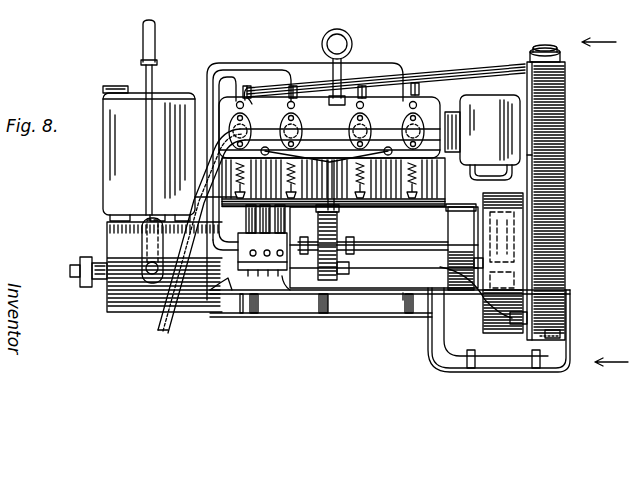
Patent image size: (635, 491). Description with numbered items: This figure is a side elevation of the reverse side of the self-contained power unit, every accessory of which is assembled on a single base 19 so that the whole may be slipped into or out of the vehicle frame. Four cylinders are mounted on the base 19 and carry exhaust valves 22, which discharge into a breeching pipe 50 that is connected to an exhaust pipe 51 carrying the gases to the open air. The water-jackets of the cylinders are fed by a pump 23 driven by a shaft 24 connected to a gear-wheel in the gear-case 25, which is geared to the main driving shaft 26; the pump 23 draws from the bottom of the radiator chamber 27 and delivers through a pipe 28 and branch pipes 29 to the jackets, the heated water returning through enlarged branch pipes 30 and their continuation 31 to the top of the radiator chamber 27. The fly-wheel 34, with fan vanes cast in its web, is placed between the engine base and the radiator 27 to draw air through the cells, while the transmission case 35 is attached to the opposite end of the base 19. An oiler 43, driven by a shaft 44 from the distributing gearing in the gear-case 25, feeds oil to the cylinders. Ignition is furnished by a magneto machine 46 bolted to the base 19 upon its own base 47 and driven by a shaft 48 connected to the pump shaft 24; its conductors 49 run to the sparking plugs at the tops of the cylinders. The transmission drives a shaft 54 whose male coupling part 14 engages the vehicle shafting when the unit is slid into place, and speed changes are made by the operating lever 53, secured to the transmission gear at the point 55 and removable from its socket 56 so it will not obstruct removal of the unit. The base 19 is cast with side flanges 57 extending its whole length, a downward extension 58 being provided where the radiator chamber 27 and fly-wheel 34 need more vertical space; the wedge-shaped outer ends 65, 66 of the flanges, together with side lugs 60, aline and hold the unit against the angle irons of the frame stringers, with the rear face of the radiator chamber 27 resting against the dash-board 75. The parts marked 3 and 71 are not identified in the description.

The engine 3 is at (390, 237).
The male part of the coupling 14 is at (87, 285).
The base 19 is at (237, 199).
The exhaust valves 22 is at (460, 216).
The pump 23 is at (338, 221).
The shaft 24 is at (432, 248).
The gear-case 25 is at (487, 212).
The main driving shaft 26 is at (505, 263).
The radiator chamber 27 is at (546, 131).
The pipe 28 is at (326, 177).
The branch pipes 29 is at (329, 130).
The enlarged branch pipes 30 is at (418, 85).
The continuation 31 is at (468, 70).
The fly-wheel 34 is at (515, 234).
The transmission case 35 is at (164, 282).
The oiler 43 is at (482, 130).
The shaft 44 is at (510, 178).
The magneto machine 46 is at (266, 276).
The base 47 is at (280, 290).
The shaft 48 is at (301, 234).
The conductors 49 is at (211, 78).
The breeching pipe 50 is at (373, 133).
The exhaust pipe 51 is at (160, 333).
The operating lever 53 is at (148, 163).
The shaft 54 is at (100, 292).
The point 55 is at (147, 265).
The socket 56 is at (143, 247).
The flanges 57 is at (237, 292).
The extension 58 is at (519, 360).
The side lugs 60 is at (395, 335).
The outer ends 65 is at (206, 320).
The outer ends 66 is at (560, 338).
The ring 71 is at (347, 44).
The dash-board 75 is at (547, 158).